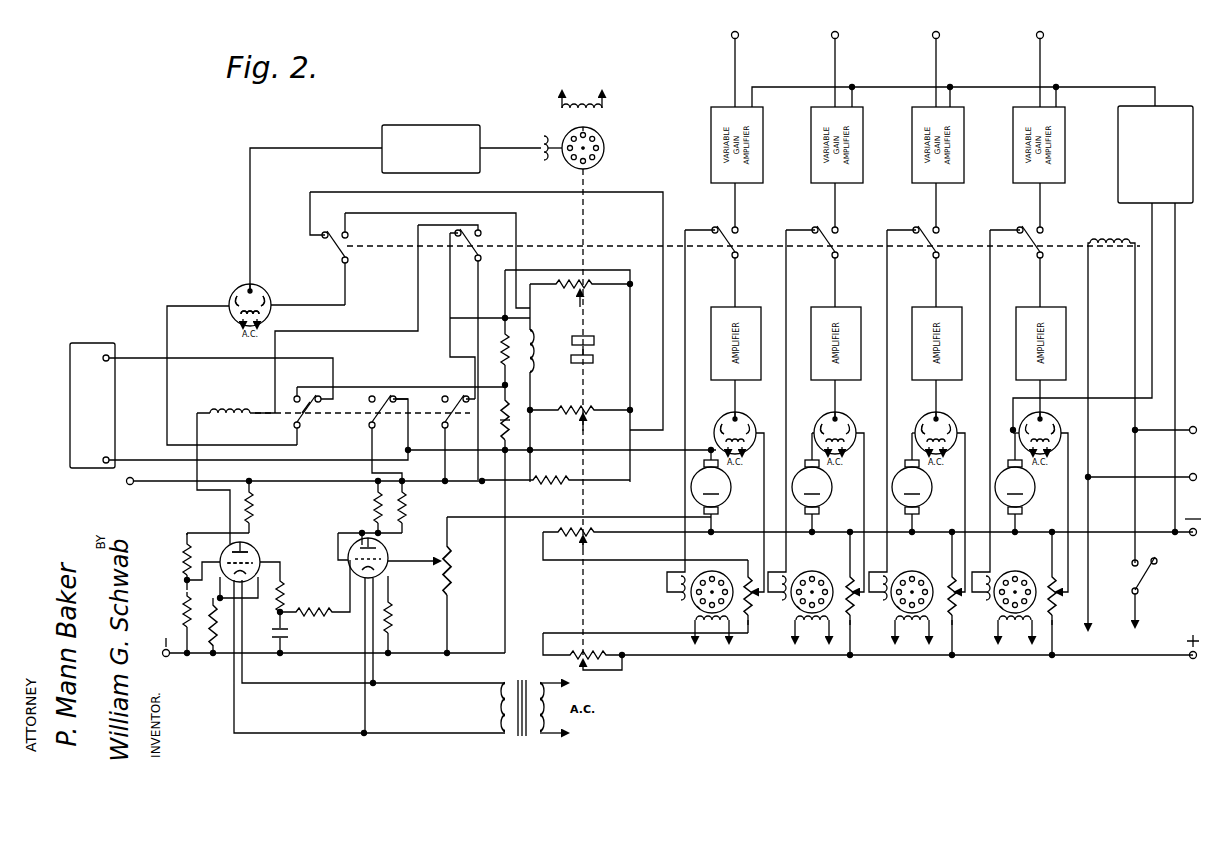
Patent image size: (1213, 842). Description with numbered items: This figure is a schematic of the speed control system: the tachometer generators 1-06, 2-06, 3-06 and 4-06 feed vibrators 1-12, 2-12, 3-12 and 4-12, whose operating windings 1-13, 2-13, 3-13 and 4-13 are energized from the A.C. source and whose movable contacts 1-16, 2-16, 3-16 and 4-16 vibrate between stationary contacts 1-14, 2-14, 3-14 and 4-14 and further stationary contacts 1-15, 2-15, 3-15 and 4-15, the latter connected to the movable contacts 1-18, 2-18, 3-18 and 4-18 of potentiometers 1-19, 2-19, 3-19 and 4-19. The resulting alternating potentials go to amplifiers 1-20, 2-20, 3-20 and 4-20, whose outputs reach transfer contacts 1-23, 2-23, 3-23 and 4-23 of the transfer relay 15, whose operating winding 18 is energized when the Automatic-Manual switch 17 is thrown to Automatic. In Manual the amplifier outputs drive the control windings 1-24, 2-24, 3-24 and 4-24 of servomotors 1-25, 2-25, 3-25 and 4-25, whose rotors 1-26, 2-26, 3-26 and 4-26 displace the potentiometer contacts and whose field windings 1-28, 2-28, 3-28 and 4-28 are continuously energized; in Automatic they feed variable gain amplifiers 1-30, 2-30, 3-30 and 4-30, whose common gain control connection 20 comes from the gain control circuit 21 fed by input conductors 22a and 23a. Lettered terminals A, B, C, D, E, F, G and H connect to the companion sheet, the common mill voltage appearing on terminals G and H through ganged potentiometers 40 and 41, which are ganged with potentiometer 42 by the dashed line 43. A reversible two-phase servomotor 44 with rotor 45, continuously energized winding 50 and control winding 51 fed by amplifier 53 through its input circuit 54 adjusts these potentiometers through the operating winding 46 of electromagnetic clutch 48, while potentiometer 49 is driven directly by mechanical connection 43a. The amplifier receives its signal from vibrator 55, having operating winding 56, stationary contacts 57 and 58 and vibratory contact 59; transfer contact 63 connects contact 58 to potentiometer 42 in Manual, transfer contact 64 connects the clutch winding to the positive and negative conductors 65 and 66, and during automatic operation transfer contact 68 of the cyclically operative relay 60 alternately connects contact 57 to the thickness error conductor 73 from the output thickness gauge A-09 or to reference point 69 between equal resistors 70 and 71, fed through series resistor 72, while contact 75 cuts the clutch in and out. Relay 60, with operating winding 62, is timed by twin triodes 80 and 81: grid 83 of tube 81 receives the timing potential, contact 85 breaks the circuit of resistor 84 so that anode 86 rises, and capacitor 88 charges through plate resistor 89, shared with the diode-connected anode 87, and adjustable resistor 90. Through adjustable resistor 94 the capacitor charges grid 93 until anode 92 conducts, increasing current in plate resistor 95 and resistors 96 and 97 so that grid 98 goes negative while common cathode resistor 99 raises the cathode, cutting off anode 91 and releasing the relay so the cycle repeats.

The alternating current amplifier 53 is at (452, 125).
The input circuit 54 is at (250, 189).
The control winding 51 is at (542, 160).
The rotor 45 is at (604, 148).
The reversible two-phase servomotor 44 is at (560, 126).
The winding 50 is at (602, 112).
The mechanical connection 43a is at (586, 215).
The transfer contact 63 is at (347, 254).
The transfer contact 64 is at (482, 238).
The vibrator 55 is at (223, 292).
The operating winding 56 is at (271, 316).
The stationary contact 57 is at (228, 319).
The stationary contact 58 is at (271, 296).
The vibratory contact 59 is at (262, 288).
The thickness gauge A-09 is at (104, 336).
The conductor 73 is at (333, 360).
The operating winding 62 is at (246, 405).
The transfer contact 68 is at (399, 417).
The cyclically operative three-pole relay 60 is at (294, 417).
The relay contact 85 is at (388, 437).
The contact 75 is at (449, 437).
The resistor 70 is at (501, 342).
The point of reference potential 69 is at (516, 521).
The resistor 71 is at (500, 433).
The operating winding 46 is at (536, 372).
The potentiometer 49 is at (576, 283).
The dashed line 43 is at (588, 368).
The electromagnetic clutch 48 is at (645, 273).
The potentiometer 42 is at (580, 424).
The voltage reducing series resistor 72 is at (568, 477).
The anode 86 is at (398, 564).
The potentiometer 40 is at (868, 545).
The potentiometer 41 is at (599, 649).
The lettered terminal A is at (734, 56).
The lettered terminal B is at (835, 56).
The lettered terminal C is at (936, 56).
The lettered terminal D is at (1040, 56).
The common gain control connection 20 is at (1124, 87).
The variable gain amplifier 1-30 is at (715, 108).
The variable gain amplifier 2-30 is at (815, 108).
The variable gain amplifier 3-30 is at (916, 108).
The variable gain amplifier 4-30 is at (1017, 108).
The gain control circuit 21 is at (1175, 106).
The transfer contact 1-23 is at (734, 232).
The transfer contact 2-23 is at (835, 232).
The transfer contact 3-23 is at (936, 232).
The transfer contact 4-23 is at (1040, 232).
The operating winding 18 is at (1113, 240).
The transfer relay 15 is at (1112, 253).
The input conductor 22a is at (1153, 272).
The input conductor 23a is at (1175, 313).
The amplifier 1-20 is at (722, 307).
The amplifier 2-20 is at (822, 307).
The amplifier 3-20 is at (923, 307).
The amplifier 4-20 is at (1027, 307).
The stationary contact 1-14 is at (721, 420).
The vibrator 1-12 is at (740, 416).
The movable contact 1-16 is at (724, 410).
The stationary contact 1-15 is at (750, 426).
The operating winding 1-13 is at (762, 464).
The tachometer generator 1-06 is at (711, 492).
The stationary contact 2-14 is at (829, 414).
The vibrator 2-12 is at (837, 412).
The movable contact 2-16 is at (827, 406).
The stationary contact 2-15 is at (853, 424).
The operating winding 2-13 is at (858, 464).
The tachometer generator 2-06 is at (812, 484).
The stationary contact 3-14 is at (928, 418).
The vibrator 3-12 is at (938, 412).
The movable contact 3-16 is at (926, 406).
The stationary contact 3-15 is at (955, 425).
The operating winding 3-13 is at (960, 462).
The tachometer generator 3-06 is at (912, 484).
The stationary contact 4-14 is at (1033, 413).
The vibrator 4-12 is at (1044, 413).
The movable contact 4-16 is at (1053, 420).
The stationary contact 4-15 is at (1068, 424).
The operating winding 4-13 is at (1068, 436).
The tachometer generator 4-06 is at (1015, 484).
The lettered terminal E is at (1166, 417).
The lettered terminal F is at (1142, 464).
The terminal G is at (1193, 537).
The terminal H is at (1192, 656).
The Automatic-Manual switch 17 is at (1150, 581).
The control winding 1-24 is at (676, 600).
The rotor 1-26 is at (712, 571).
The reversible two-phase servomotor 1-25 is at (694, 610).
The field winding 1-28 is at (696, 648).
The movable contact 1-18 is at (753, 601).
The potentiometer 1-19 is at (770, 631).
The control winding 2-24 is at (788, 574).
The rotor 2-26 is at (830, 569).
The reversible two-phase servomotor 2-25 is at (826, 610).
The field winding 2-28 is at (795, 645).
The movable contact 2-18 is at (854, 600).
The potentiometer 2-19 is at (870, 632).
The control winding 3-24 is at (886, 573).
The rotor 3-26 is at (932, 565).
The reversible two-phase servomotor 3-25 is at (926, 610).
The field winding 3-28 is at (898, 647).
The movable contact 3-18 is at (956, 596).
The potentiometer 3-19 is at (972, 630).
The control winding 4-24 is at (988, 573).
The rotor 4-26 is at (1036, 564).
The reversible two-phase servomotor 4-25 is at (1030, 610).
The field winding 4-28 is at (1002, 646).
The movable contact 4-18 is at (1070, 592).
The potentiometer 4-19 is at (1070, 605).
The positive conductor 65 is at (178, 485).
The plate resistor 95 is at (254, 501).
The twin triode 80 is at (250, 545).
The resistor 96 is at (184, 541).
The resistor 97 is at (184, 612).
The common cathode resistor 99 is at (215, 650).
The negative conductor 66 is at (168, 658).
The adjustable resistor 94 is at (273, 600).
The capacitor 88 is at (279, 646).
The adjustable series resistor 90 is at (325, 606).
The grid 93 is at (261, 561).
The anode 92 is at (262, 548).
The anode 91 is at (226, 542).
The grid 98 is at (190, 533).
The anode 87 is at (350, 533).
The plate resistor 89 is at (374, 500).
The resistor 84 is at (406, 525).
The twin triode 81 is at (394, 556).
The grid 83 is at (393, 597).